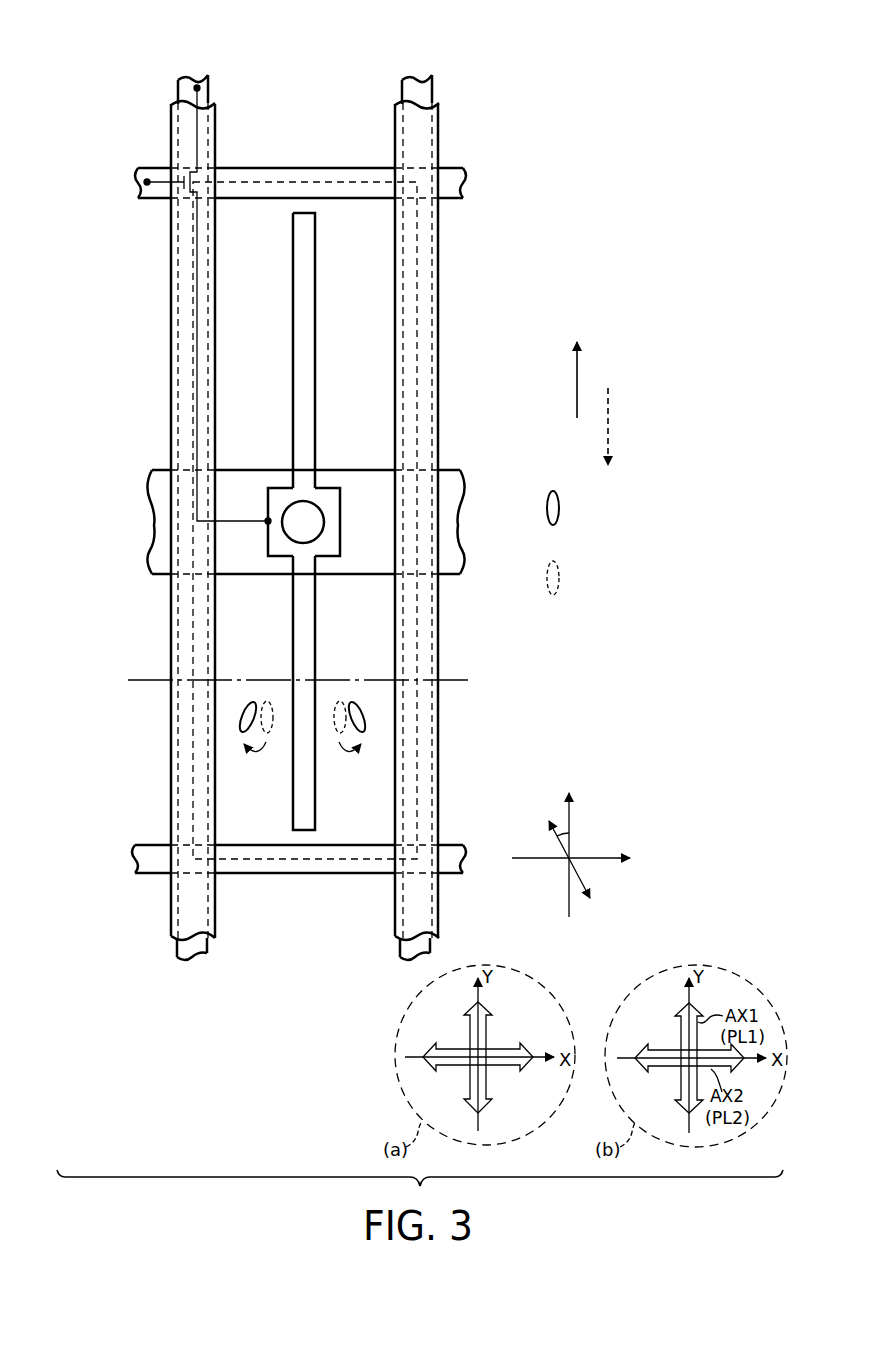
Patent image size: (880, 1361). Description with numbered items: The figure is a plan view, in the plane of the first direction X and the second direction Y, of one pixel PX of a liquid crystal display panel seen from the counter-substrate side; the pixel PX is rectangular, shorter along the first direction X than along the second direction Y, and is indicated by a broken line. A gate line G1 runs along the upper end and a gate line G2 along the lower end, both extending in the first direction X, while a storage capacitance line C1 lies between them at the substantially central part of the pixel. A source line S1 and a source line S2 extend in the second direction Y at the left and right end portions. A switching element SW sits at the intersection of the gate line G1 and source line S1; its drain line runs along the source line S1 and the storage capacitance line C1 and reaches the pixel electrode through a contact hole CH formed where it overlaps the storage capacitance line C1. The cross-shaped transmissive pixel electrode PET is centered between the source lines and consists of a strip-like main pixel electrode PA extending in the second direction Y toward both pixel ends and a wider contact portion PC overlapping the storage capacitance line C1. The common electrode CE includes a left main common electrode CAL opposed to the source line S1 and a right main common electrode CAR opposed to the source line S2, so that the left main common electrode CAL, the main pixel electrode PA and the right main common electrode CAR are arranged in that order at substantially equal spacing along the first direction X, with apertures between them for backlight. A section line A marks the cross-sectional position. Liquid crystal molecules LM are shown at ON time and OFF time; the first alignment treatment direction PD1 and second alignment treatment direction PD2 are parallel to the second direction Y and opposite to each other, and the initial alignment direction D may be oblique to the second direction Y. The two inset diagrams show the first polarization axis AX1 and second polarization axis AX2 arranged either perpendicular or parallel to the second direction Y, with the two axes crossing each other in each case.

The source line S1 is at (188, 82).
The source line S2 is at (417, 82).
The gate line G1 is at (138, 186).
The gate line G2 is at (135, 858).
The storage capacitance line C1 is at (151, 531).
The pixel PX is at (319, 174).
The switching element SW is at (187, 198).
The transmissive pixel electrode PET is at (375, 521).
The main pixel electrode PA is at (315, 338).
The contact portion PC is at (282, 494).
The contact hole CH is at (319, 506).
The common electrode CE is at (305, 551).
The left main common electrode CAL is at (170, 776).
The right main common electrode CAR is at (440, 637).
The section line A- A is at (301, 681).
The liquid crystal molecule LM is at (502, 621).
The first alignment treatment direction PD1 is at (577, 368).
The second alignment treatment direction PD2 is at (608, 400).
The initial alignment direction D is at (550, 816).
The first direction X is at (585, 859).
The second direction Y is at (568, 840).
The first polarization axis AX1 is at (499, 1067).
The second polarization axis AX2 is at (486, 1021).